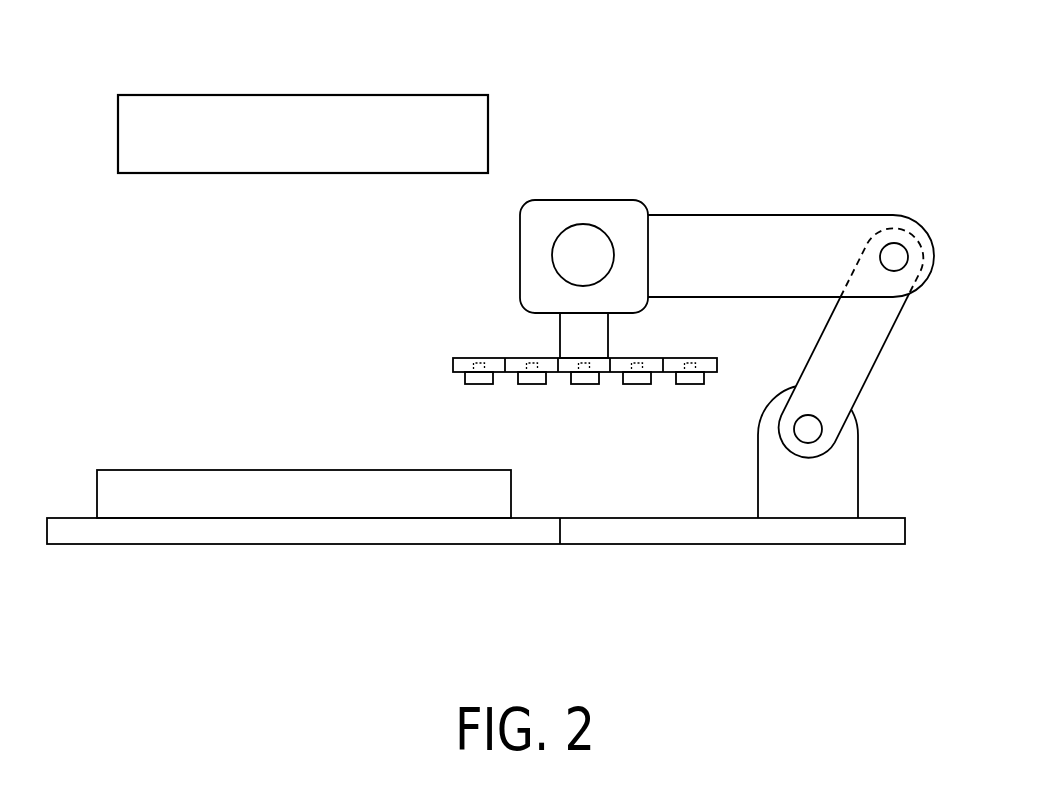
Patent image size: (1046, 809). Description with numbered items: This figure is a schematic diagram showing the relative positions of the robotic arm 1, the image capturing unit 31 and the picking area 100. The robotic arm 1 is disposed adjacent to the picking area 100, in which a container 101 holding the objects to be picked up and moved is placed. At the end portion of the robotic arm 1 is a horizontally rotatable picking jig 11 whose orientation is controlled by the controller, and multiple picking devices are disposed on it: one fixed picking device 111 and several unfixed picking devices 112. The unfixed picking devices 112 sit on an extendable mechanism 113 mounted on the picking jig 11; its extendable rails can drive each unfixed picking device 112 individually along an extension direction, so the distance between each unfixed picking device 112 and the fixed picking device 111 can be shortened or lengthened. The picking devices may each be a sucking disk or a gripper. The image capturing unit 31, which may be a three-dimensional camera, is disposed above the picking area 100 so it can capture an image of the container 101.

The robotic arm 1 is at (899, 190).
The picking jig 11 is at (554, 337).
The fixed picking device 111 is at (583, 384).
The unfixed picking devices 112 is at (478, 384).
The extendable mechanism 113 is at (460, 365).
The image capturing unit 31 is at (440, 95).
The picking area 100 is at (50, 574).
The container 101 is at (96, 486).